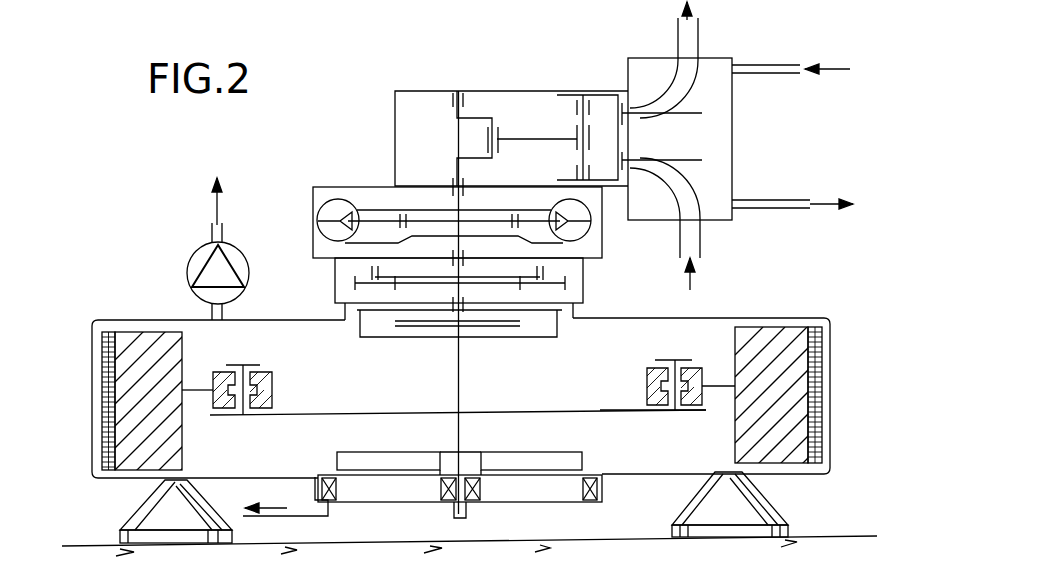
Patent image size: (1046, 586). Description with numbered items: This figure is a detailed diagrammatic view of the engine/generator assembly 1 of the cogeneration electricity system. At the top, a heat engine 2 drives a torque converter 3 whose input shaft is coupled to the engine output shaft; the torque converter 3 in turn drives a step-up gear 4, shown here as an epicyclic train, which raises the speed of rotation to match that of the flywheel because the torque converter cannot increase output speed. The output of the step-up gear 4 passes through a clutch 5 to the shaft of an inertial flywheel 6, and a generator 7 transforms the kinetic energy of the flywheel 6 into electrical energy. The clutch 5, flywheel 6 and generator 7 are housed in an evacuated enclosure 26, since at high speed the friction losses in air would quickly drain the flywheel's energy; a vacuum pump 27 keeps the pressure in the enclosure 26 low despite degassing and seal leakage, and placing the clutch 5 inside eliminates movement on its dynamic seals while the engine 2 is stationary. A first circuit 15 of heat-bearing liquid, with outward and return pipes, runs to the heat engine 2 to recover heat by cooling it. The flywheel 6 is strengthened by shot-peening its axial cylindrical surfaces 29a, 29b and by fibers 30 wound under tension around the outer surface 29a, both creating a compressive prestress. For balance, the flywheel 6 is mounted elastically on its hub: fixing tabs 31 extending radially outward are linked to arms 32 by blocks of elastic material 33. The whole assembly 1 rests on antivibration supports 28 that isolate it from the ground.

The engine/generator assembly 1 is at (243, 167).
The heat engine 2 is at (412, 127).
The torque converter 3 is at (372, 204).
The step-up gear 4 is at (365, 283).
The clutch 5 is at (375, 320).
The inertial flywheel 6 is at (145, 350).
The generator 7 is at (382, 485).
The first circuit 15 is at (765, 200).
The evacuated enclosure 26 is at (207, 345).
The vacuum pump 27 is at (212, 270).
The antivibration supports 28 is at (158, 510).
The outer axial cylindrical surface 29a is at (105, 352).
The axial cylindrical surface 29b is at (183, 433).
The fibers 30 is at (103, 436).
The fixing tabs 31 is at (718, 386).
The arms 32 is at (688, 412).
The blocks of elastic material 33 is at (645, 378).